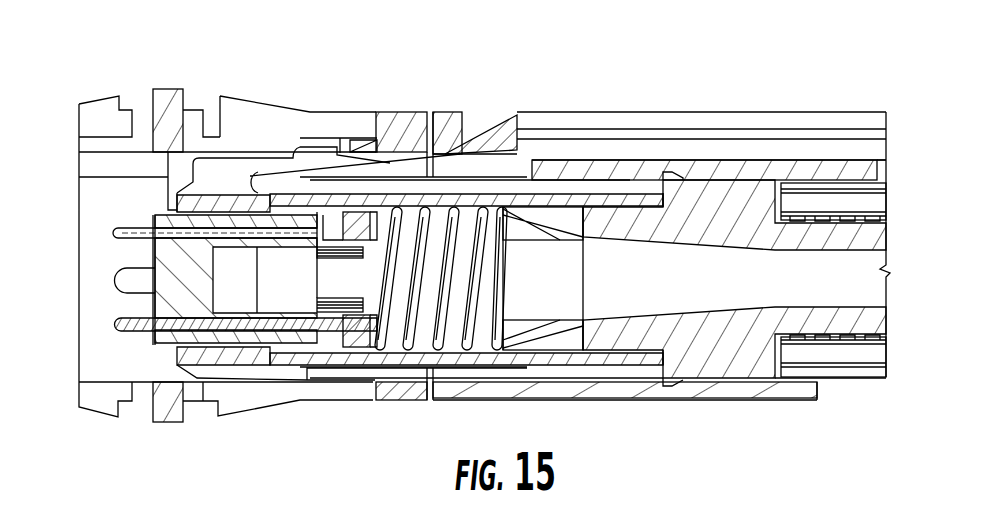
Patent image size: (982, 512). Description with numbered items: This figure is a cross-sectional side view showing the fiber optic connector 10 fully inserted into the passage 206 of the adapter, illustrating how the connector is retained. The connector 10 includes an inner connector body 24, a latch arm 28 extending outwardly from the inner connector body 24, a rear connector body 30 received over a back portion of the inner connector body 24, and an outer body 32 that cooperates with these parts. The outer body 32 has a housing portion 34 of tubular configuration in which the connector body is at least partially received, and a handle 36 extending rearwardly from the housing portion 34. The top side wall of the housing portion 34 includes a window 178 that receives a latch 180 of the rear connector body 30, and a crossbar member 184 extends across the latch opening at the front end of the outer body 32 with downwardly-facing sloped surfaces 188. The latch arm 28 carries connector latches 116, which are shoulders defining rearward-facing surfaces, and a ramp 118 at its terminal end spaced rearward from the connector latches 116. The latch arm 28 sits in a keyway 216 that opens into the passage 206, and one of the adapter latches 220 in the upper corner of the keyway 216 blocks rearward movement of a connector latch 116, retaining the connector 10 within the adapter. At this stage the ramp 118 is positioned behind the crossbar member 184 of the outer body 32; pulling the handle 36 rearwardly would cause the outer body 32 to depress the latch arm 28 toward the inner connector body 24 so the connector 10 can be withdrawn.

The connector 10 is at (272, 372).
The inner connector body 24 is at (273, 195).
The latch arm 28 is at (310, 145).
The rear connector body 30 is at (718, 190).
The outer body 32 is at (630, 400).
The housing portion 34 is at (700, 393).
The handle 36 is at (848, 112).
The connector latches 116 is at (360, 138).
The ramp 118 is at (493, 132).
The window 178 is at (610, 167).
The latch 180 is at (672, 177).
The crossbar member 184 is at (448, 113).
The sloped surfaces 188 is at (450, 150).
The passage 206 is at (101, 206).
The keyway 216 is at (232, 149).
The adapter latches 220 is at (400, 143).